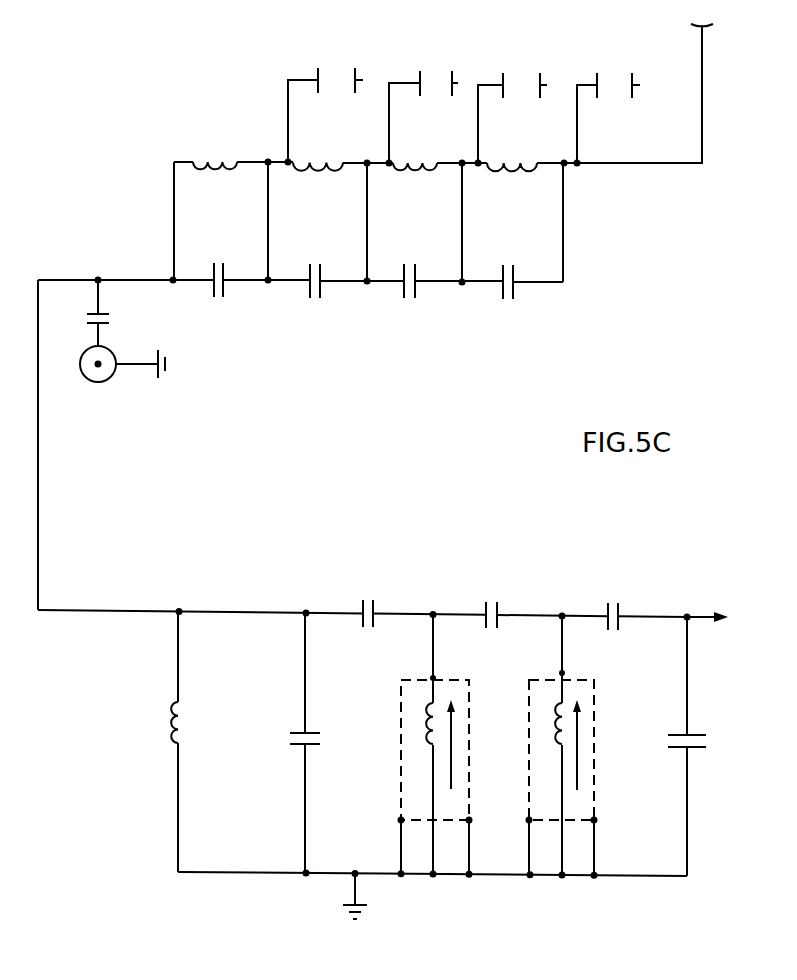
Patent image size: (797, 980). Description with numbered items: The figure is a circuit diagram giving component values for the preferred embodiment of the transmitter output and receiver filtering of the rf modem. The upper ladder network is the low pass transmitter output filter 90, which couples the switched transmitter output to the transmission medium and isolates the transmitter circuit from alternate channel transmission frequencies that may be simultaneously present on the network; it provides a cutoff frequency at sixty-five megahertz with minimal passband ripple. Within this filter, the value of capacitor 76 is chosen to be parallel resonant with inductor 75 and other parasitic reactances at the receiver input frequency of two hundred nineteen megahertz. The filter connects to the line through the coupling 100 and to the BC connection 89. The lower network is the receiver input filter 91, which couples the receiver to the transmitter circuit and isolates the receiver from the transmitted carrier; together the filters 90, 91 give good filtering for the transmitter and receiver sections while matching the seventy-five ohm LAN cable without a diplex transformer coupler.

The inductor 75 is at (215, 180).
The capacitor 76 is at (217, 266).
The BC line 89 is at (702, 108).
The transmitter output filter 90 is at (594, 289).
The receiver input filter 91 is at (424, 552).
The line input coupling (.001 uF capacitor and connector) 100 is at (98, 336).